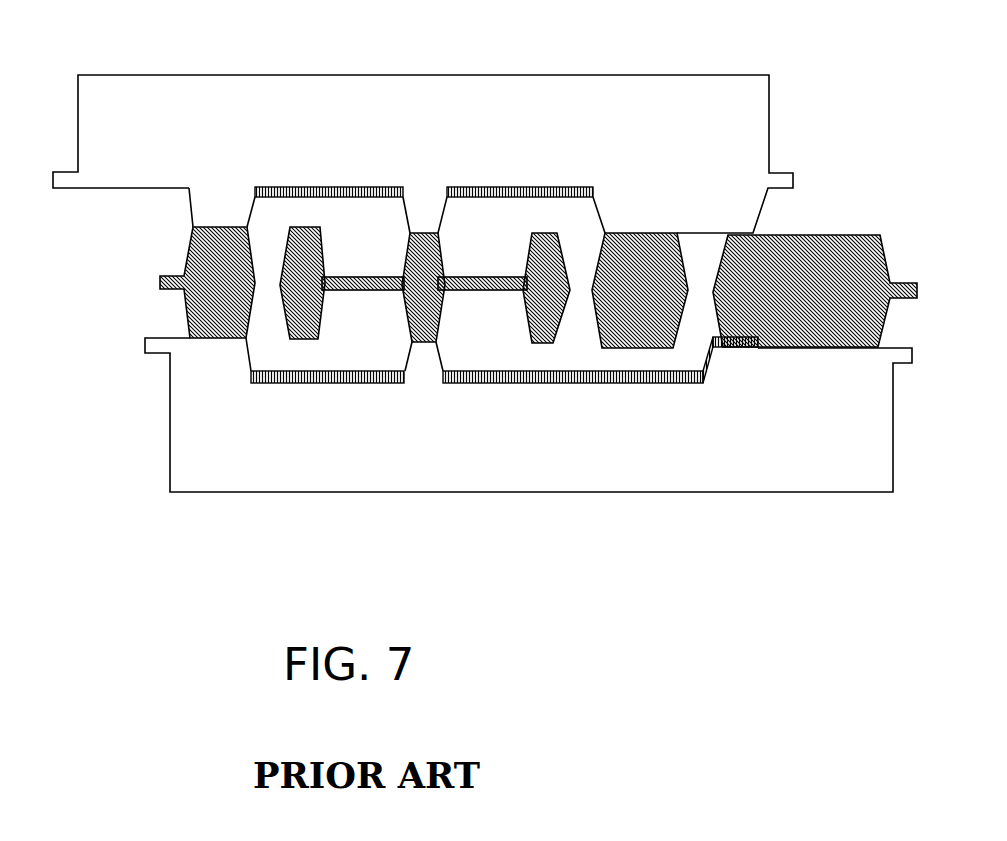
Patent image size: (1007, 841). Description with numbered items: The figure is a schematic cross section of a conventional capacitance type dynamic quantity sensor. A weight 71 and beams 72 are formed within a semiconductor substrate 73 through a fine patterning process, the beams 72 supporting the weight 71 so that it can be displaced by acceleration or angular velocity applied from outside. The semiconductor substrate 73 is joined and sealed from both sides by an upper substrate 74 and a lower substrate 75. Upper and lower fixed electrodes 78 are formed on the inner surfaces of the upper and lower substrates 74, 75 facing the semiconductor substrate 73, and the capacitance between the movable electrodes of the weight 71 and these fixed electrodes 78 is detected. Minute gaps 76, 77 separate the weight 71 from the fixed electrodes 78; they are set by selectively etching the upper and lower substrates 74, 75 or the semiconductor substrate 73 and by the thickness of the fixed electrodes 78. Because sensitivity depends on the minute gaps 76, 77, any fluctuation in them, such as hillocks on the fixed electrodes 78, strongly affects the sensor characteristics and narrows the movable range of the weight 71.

The weight 71 is at (305, 240).
The beams 72 is at (358, 283).
The semiconductor substrate 73 is at (190, 262).
The upper substrate 74 is at (747, 137).
The lower substrate 75 is at (185, 428).
The minute gap 76 is at (350, 213).
The minute gap 77 is at (308, 358).
The fixed electrodes 78 is at (488, 192).